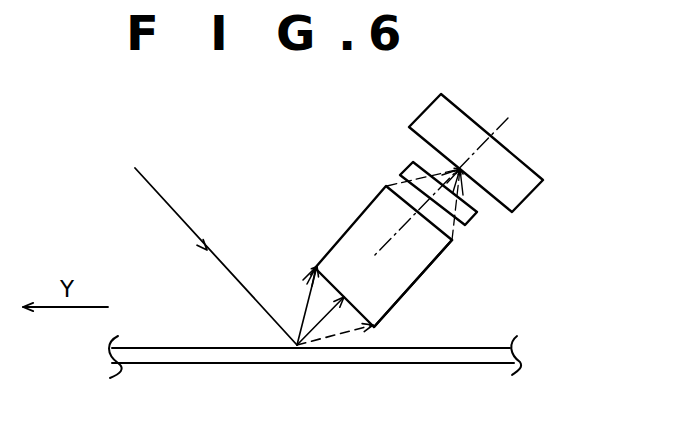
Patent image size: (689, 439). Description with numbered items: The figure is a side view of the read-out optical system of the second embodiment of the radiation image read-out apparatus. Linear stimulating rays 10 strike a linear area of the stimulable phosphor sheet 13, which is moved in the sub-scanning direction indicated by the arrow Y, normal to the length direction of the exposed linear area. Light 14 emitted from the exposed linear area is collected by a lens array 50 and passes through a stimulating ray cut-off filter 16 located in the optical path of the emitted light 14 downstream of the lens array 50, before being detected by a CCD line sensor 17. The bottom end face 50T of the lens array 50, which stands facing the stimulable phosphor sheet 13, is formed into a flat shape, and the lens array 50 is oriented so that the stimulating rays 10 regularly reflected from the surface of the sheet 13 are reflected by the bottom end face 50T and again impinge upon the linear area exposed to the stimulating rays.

The stimulating rays 10 is at (166, 200).
The stimulable phosphor sheet 13 is at (468, 362).
The emitted light 14 is at (298, 342).
The stimulating ray cut-off filter 16 is at (473, 217).
The CCD line sensor 17 is at (537, 168).
The lens array 50 is at (423, 262).
The bottom end face 50T is at (357, 308).